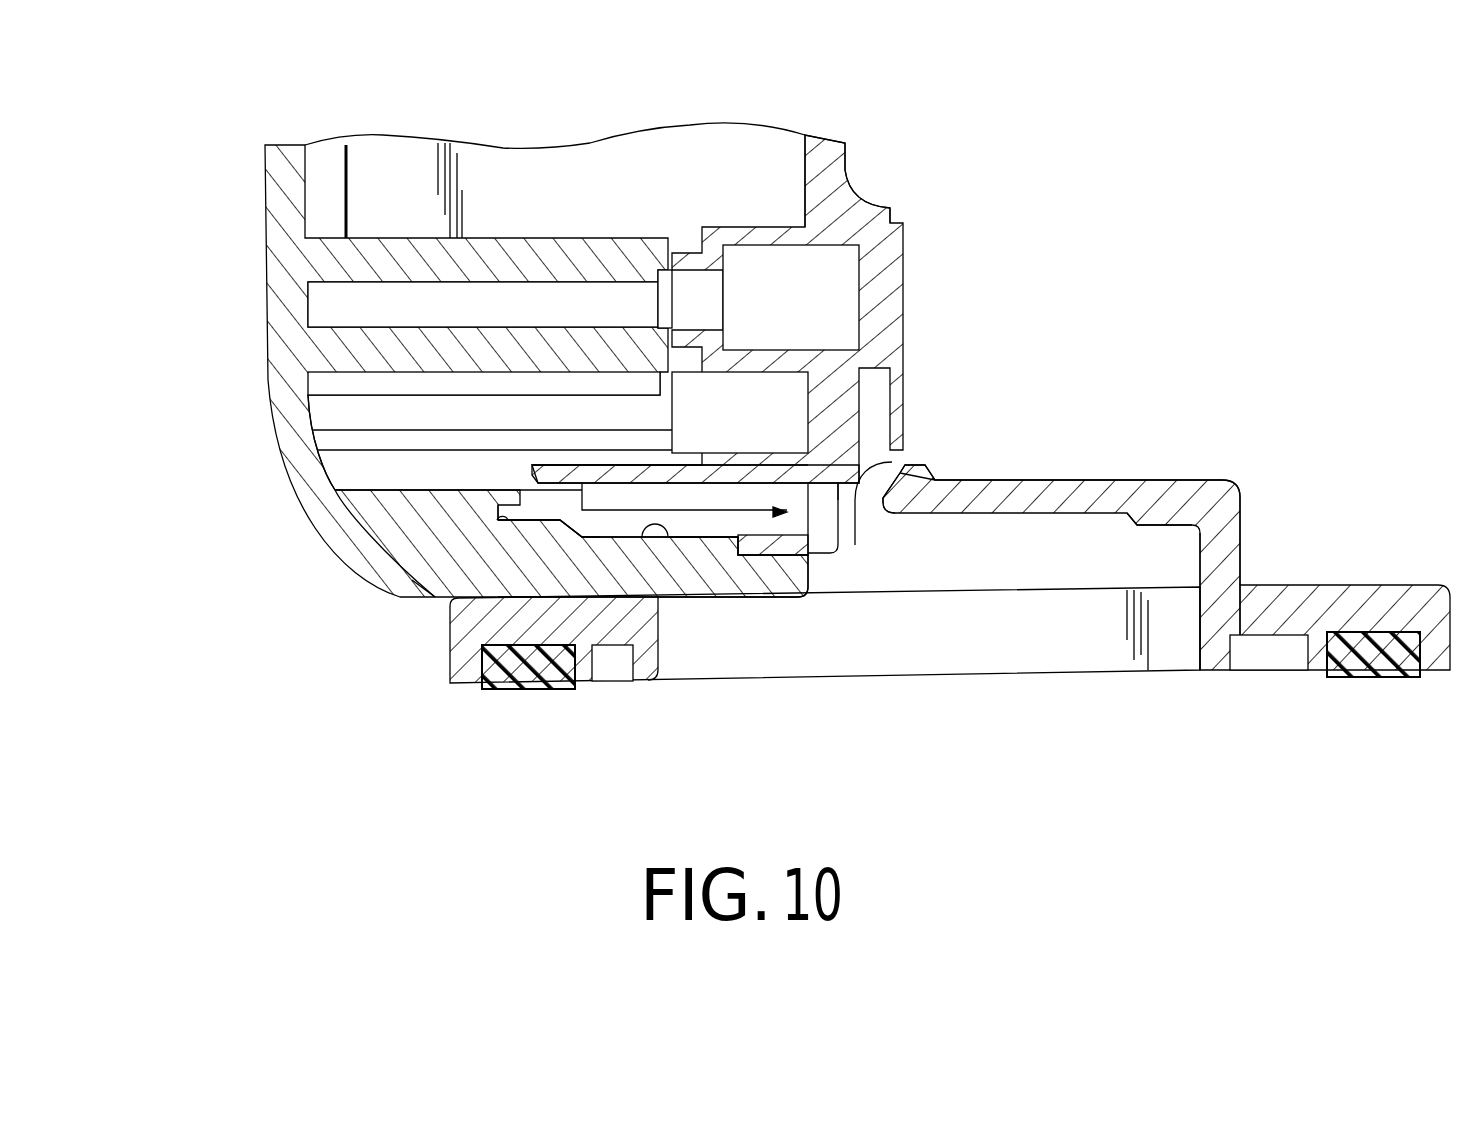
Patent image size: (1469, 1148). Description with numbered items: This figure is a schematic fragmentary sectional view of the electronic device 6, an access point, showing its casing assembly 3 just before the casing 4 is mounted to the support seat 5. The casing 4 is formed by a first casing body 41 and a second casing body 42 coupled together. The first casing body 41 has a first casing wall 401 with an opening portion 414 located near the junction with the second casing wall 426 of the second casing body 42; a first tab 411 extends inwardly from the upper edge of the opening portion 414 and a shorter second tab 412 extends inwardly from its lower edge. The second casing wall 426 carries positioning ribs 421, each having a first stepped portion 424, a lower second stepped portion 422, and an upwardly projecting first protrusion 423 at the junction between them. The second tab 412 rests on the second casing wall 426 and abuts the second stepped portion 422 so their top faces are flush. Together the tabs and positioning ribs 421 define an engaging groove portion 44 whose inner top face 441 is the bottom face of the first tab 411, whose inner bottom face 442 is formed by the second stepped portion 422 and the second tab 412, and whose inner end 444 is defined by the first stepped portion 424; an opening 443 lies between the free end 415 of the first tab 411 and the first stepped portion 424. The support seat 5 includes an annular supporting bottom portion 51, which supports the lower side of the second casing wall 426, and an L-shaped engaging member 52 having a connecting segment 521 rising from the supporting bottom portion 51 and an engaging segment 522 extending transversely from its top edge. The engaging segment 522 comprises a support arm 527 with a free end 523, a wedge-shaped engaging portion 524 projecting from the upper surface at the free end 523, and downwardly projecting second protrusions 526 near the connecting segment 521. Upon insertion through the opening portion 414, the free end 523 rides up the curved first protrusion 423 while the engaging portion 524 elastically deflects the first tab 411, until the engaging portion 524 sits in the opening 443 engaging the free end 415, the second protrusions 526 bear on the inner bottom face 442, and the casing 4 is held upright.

The casing assembly 3 is at (827, 283).
The casing 4 is at (290, 188).
The support seat 5 is at (1270, 618).
The electronic device 6 is at (788, 439).
The first casing body 41 is at (835, 400).
The second casing body 42 is at (290, 345).
The engaging groove portion 44 is at (812, 497).
The supporting bottom portion 51 is at (1105, 643).
The engaging member 52 is at (1217, 490).
The first casing wall 401 is at (840, 200).
The first tab 411 is at (628, 468).
The second tab 412 is at (780, 540).
The opening portion 414 is at (905, 495).
The free end of the first tab 415 is at (520, 488).
The positioning rib 421 is at (597, 540).
The second stepped portion 422 is at (712, 545).
The first protrusion 423 is at (523, 527).
The first stepped portion 424 is at (498, 492).
The second casing wall 426 is at (508, 516).
The inner top face 441 is at (618, 483).
The inner bottom face 442 is at (665, 530).
The opening 443 is at (497, 515).
The inner end 444 is at (477, 575).
The connecting segment 521 is at (1227, 562).
The engaging segment 522 is at (1082, 485).
The free end 523 is at (905, 495).
The engaging portion 524 is at (910, 468).
The second protrusion 526 is at (1177, 518).
The support arm 527 is at (1140, 477).